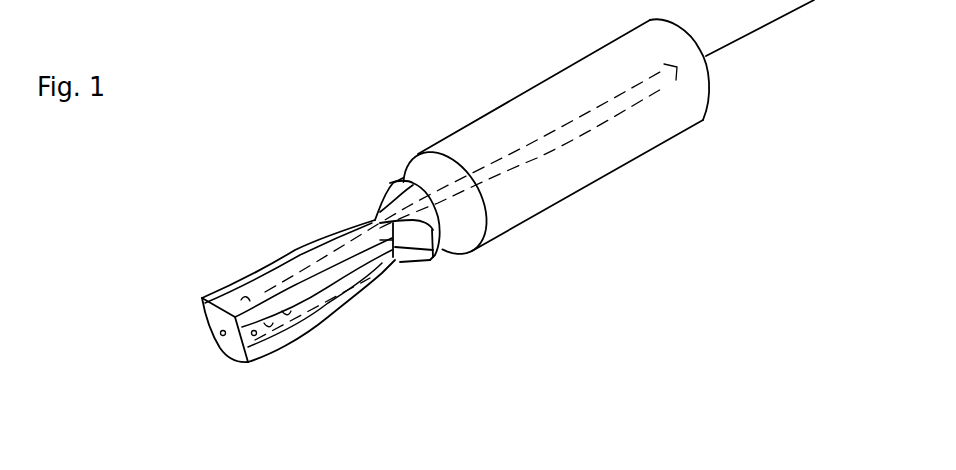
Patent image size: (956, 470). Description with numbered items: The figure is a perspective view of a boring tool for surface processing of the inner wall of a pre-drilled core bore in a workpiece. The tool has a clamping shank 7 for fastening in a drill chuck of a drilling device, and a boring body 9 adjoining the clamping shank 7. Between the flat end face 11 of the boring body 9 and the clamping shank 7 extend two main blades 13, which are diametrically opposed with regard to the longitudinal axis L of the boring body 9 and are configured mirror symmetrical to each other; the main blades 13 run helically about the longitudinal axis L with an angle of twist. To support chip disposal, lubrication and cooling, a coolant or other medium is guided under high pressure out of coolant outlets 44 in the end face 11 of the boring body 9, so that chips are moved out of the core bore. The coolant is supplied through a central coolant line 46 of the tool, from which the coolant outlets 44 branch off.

The clamping shank 7 is at (634, 164).
The boring body 9 is at (320, 205).
The end face 11 is at (209, 320).
The main blade 13 is at (257, 272).
The coolant outlets 44 is at (223, 336).
The central coolant line 46 is at (513, 172).
The longitudinal axis L is at (758, 28).